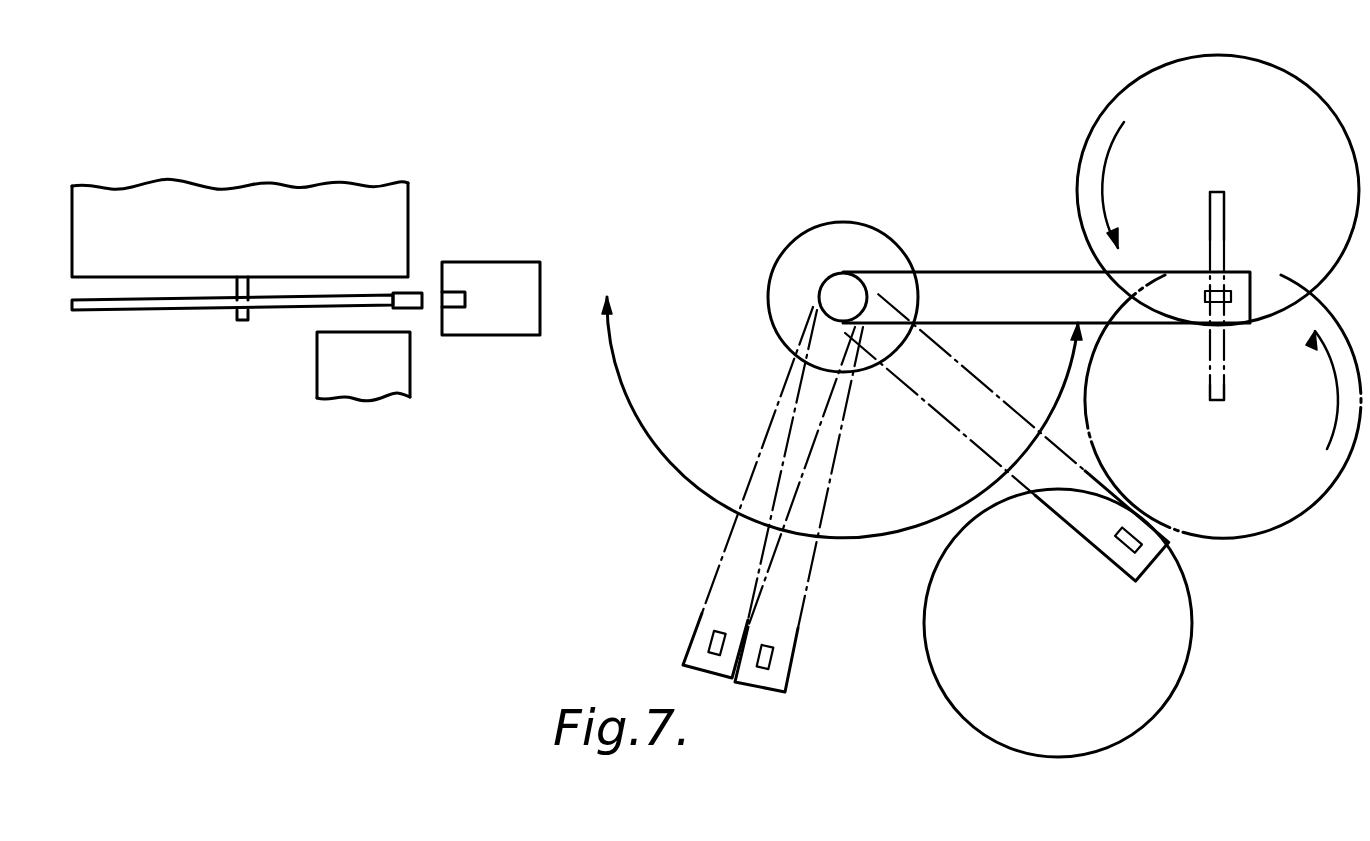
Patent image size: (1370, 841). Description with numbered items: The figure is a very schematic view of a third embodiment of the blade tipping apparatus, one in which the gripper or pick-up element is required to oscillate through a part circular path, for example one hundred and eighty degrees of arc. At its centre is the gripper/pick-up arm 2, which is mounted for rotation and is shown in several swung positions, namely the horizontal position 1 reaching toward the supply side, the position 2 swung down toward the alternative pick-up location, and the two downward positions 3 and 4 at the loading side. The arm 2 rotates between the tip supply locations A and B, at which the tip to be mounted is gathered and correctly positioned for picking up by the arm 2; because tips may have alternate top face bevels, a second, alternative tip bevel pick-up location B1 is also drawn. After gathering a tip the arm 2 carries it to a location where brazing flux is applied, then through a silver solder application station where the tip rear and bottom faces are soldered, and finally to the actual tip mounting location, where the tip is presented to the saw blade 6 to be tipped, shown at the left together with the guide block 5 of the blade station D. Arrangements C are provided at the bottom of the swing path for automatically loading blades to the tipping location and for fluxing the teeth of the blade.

The pivoting transfer arm (first position) 1 is at (1046, 297).
The gripper/pick-up arm 2 is at (1007, 437).
The transfer arm in third position 3 is at (799, 509).
The transfer arm in fourth position 4 is at (750, 492).
The lower guide block 5 is at (346, 376).
The saw blade 6 is at (226, 248).
The tip supply location A is at (1202, 139).
The tip supply location B is at (1202, 476).
The alternative tip bevel pick-up location B1 is at (1038, 667).
The blade loading and fluxing arrangements C is at (710, 722).
The delivery station D is at (254, 425).